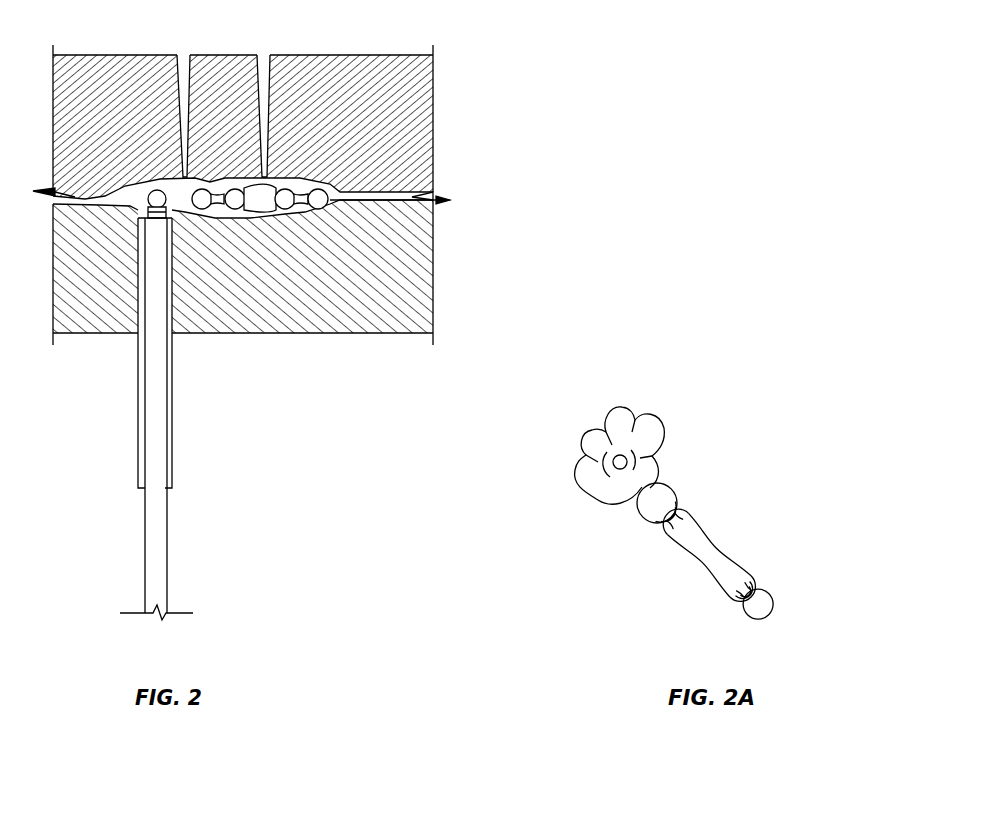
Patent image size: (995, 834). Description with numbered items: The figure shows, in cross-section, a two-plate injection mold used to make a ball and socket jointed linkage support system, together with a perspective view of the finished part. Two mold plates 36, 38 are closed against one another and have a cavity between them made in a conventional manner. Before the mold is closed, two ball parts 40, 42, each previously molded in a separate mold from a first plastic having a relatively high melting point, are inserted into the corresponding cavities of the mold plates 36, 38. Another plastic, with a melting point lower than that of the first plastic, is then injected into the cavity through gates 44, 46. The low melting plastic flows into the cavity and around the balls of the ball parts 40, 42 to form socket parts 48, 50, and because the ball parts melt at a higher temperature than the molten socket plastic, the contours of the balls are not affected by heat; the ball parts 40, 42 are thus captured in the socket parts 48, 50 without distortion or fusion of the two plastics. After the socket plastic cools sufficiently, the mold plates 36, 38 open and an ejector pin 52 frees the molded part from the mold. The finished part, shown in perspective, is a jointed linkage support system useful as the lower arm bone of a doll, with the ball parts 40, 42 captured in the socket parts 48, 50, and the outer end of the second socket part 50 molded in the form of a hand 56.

In FIG. 2, the mold plate 36 is at (425, 100).
In FIG. 2, the mold plate 38 is at (418, 282).
In FIG. 2, the ball part 40 is at (213, 213).
In FIG. 2A, the ball part 40 is at (668, 538).
In FIG. 2, the ball part 42 is at (312, 210).
In FIG. 2A, the ball part 42 is at (743, 613).
In FIG. 2, the gate 44 is at (187, 53).
In FIG. 2, the gate 46 is at (267, 53).
In FIG. 2, the socket part 48 is at (283, 181).
In FIG. 2A, the socket part 48 is at (727, 557).
In FIG. 2, the second socket part 50 is at (208, 178).
In FIG. 2A, the second socket part 50 is at (723, 450).
In FIG. 2, the ejector pin 52 is at (167, 518).
In FIG. 2A, the hand 56 is at (663, 410).